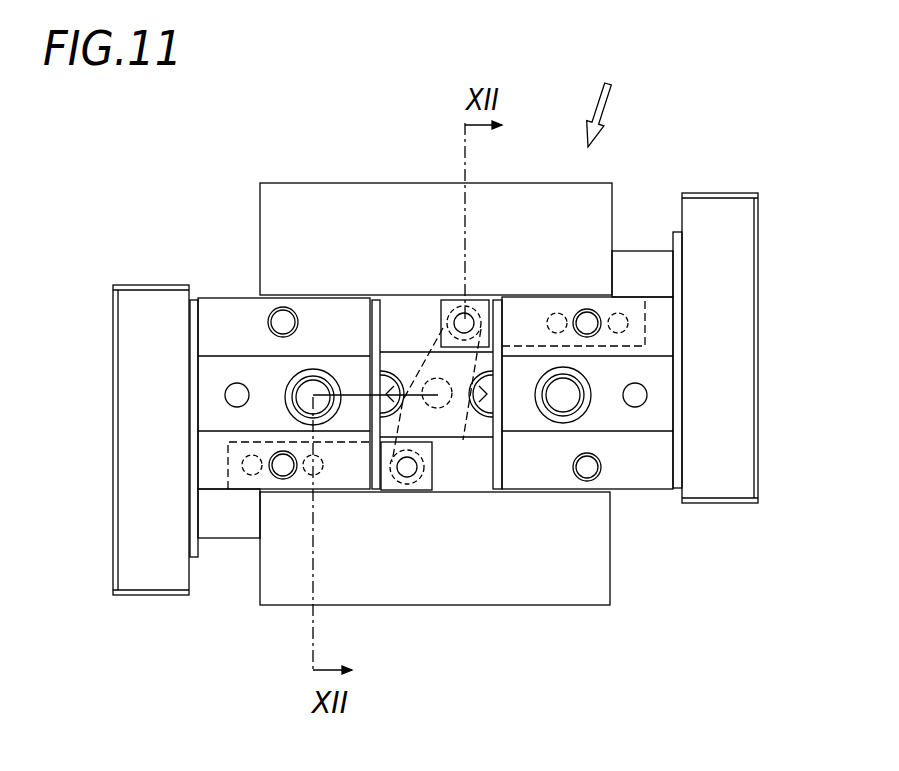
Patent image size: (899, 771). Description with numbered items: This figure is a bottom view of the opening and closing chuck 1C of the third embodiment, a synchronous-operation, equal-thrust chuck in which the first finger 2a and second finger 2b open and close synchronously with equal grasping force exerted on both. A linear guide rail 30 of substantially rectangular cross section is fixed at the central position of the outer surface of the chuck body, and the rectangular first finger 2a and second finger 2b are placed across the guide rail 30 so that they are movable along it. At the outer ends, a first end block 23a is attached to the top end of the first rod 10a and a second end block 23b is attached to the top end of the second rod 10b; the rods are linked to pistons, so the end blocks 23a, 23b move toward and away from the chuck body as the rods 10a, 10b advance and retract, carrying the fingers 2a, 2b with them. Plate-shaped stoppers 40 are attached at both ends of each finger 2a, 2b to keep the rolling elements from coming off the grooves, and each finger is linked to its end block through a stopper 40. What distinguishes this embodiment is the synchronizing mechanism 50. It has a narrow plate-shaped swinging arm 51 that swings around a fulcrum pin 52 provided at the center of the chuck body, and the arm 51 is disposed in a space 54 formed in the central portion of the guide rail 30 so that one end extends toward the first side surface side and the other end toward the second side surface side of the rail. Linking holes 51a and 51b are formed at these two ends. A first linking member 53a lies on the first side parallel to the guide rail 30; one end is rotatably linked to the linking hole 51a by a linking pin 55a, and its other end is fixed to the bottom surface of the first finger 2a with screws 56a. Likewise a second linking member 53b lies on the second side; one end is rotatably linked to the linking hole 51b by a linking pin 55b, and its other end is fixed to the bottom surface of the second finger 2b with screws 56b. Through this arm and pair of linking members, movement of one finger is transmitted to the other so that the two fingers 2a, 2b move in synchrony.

The opening and closing chuck 1C is at (604, 94).
The first finger 2a is at (225, 323).
The second finger 2b is at (642, 480).
The first rod 10a is at (205, 525).
The second rod 10b is at (653, 274).
The first end block 23a is at (135, 492).
The second end block 23b is at (728, 392).
The guide rail 30 is at (473, 423).
The stopper 40 is at (195, 389).
The synchronizing mechanism 50 is at (420, 332).
The swinging arm 51 is at (437, 450).
The linking hole 51a is at (423, 487).
The linking hole 51b is at (457, 312).
The fulcrum pin 52 is at (450, 352).
The first linking member 53a is at (387, 482).
The second linking member 53b is at (637, 310).
The space 54 is at (400, 362).
The linking pin 55a is at (402, 485).
The linking pin 55b is at (466, 322).
The screws 56a is at (313, 478).
The screws 56b is at (557, 312).